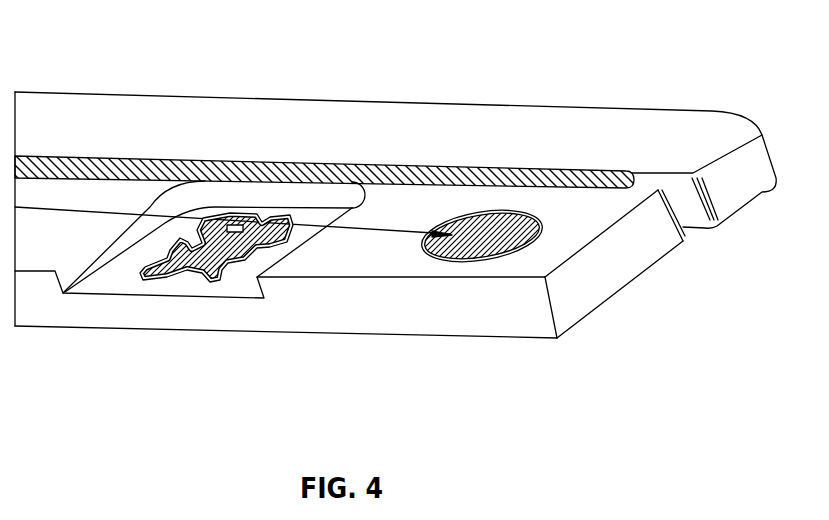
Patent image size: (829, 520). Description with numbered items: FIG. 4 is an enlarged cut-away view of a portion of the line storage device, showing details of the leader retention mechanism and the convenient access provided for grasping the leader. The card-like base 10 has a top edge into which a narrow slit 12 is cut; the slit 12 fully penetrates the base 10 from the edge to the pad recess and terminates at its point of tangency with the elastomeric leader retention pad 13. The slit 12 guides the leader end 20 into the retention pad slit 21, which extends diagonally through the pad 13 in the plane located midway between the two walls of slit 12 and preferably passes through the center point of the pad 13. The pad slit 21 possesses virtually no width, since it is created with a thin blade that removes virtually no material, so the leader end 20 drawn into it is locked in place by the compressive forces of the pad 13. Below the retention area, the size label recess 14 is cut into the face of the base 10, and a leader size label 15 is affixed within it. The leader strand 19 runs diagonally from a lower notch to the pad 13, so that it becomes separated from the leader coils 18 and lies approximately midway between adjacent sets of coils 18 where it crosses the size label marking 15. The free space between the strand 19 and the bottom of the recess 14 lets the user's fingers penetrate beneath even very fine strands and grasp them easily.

The base 10 is at (517, 105).
The slit 12 is at (613, 265).
The leader retention pad 13 is at (466, 243).
The size label recess 14 is at (95, 280).
The leader size label 15 is at (190, 272).
The leader coils 18 is at (632, 183).
The leader strand 19 is at (358, 232).
The leader end 20 is at (660, 303).
The retention pad slit 21 is at (466, 243).